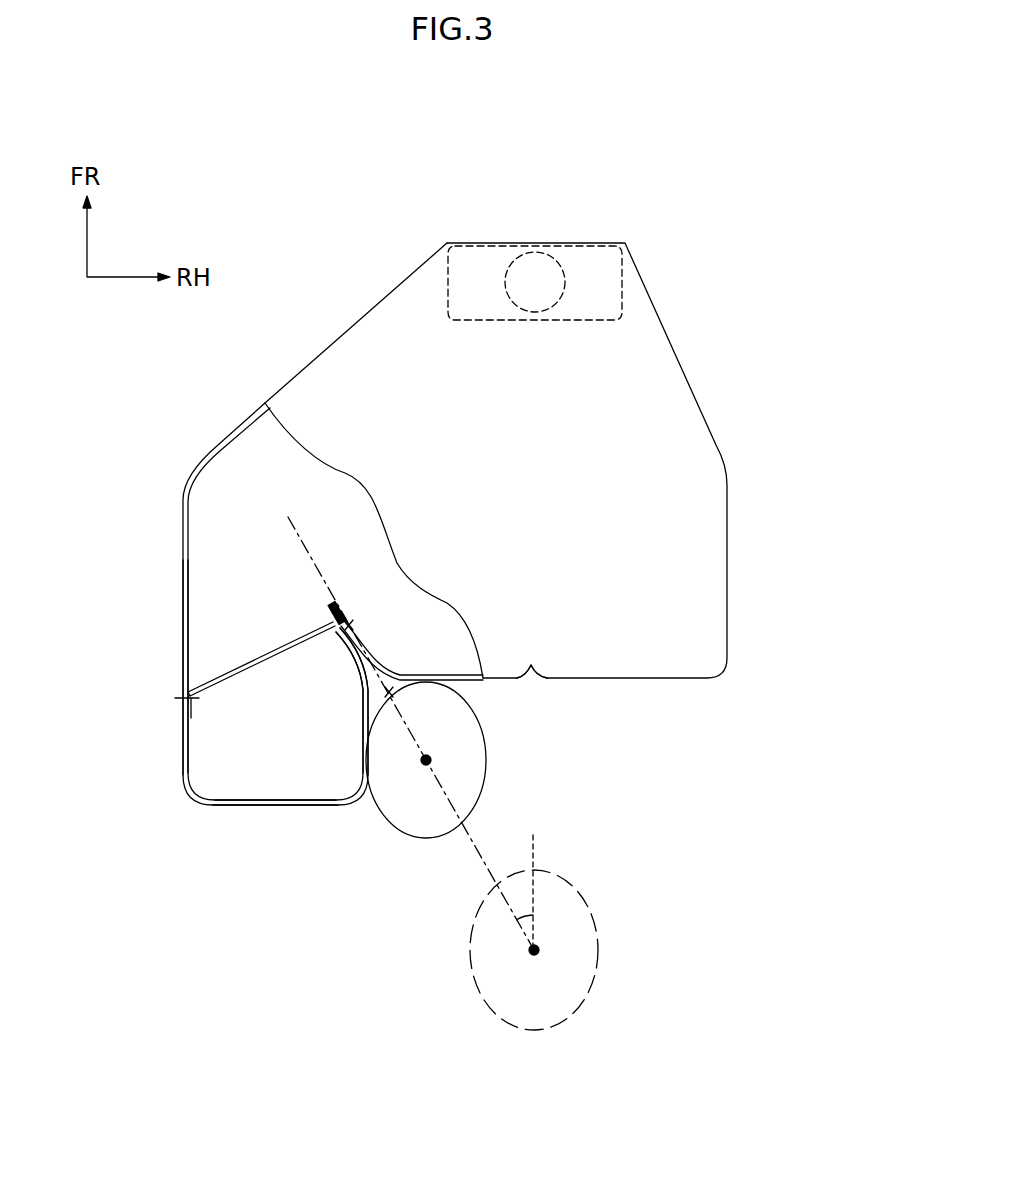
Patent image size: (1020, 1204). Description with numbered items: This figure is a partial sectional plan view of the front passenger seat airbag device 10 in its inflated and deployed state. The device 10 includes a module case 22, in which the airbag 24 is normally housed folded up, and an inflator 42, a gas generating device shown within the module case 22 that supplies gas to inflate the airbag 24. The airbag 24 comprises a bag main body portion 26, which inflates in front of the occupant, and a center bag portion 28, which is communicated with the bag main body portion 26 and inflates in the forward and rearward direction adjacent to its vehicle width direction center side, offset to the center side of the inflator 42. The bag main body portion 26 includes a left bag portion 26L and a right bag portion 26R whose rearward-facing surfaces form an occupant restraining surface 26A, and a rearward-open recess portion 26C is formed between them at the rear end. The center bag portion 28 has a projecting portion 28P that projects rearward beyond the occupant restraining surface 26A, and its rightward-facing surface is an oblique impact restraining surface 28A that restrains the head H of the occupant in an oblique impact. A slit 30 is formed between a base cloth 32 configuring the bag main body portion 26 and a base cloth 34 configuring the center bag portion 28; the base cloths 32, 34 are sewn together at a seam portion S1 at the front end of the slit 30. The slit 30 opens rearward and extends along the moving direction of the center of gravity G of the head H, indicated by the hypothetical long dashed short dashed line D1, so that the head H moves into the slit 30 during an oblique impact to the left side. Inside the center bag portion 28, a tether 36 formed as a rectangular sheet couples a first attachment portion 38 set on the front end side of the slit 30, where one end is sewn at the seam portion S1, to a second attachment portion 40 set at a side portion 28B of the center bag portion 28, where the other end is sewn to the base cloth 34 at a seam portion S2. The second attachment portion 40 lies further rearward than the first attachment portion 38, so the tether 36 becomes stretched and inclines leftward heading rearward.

The front passenger seat airbag device 10 is at (540, 166).
The module case 22 is at (475, 320).
The airbag 24 is at (335, 311).
The bag main body portion 26 is at (832, 492).
The right bag portion 26R is at (622, 517).
The left bag portion 26L is at (477, 588).
The occupant restraining surface 26A is at (493, 680).
The recess portion 26C is at (533, 668).
The center bag portion 28 is at (180, 582).
The oblique impact restraining surface 28A is at (370, 752).
The side portion 28B is at (183, 737).
The projecting portion 28P is at (277, 808).
The slit 30 is at (393, 692).
The base cloth 32 is at (420, 676).
The base cloth 34 is at (362, 700).
The tether 36 is at (265, 656).
The first attachment portion 38 is at (345, 606).
The second attachment portion 40 is at (178, 690).
The inflator 42 is at (562, 298).
The seam portion S1 is at (355, 627).
The seam portion S2 is at (178, 702).
The center of gravity G is at (427, 762).
The head H is at (427, 840).
The hypothetical line D1 is at (478, 878).